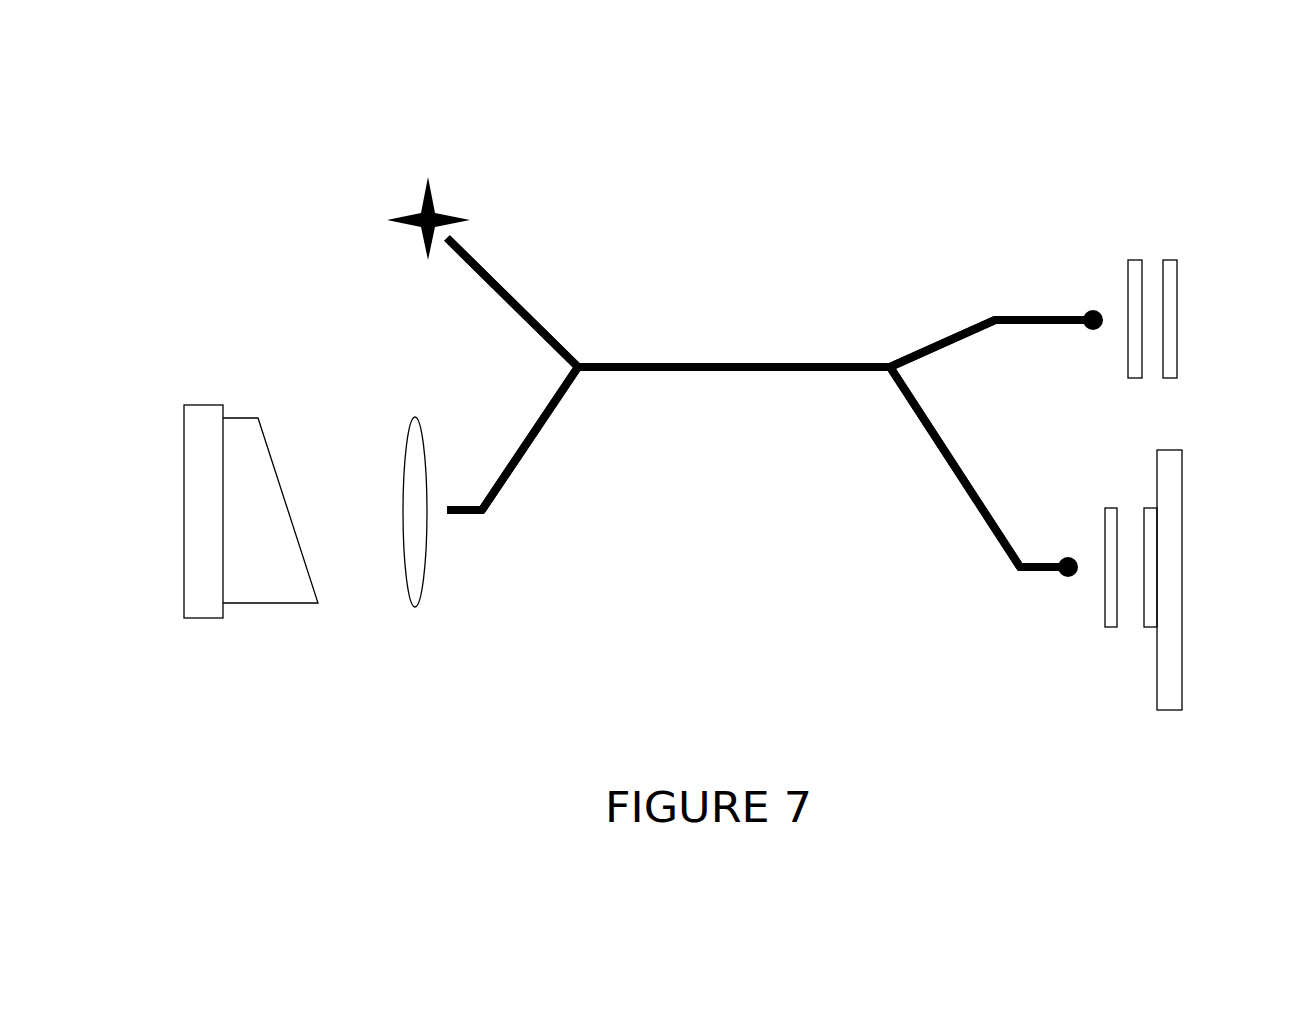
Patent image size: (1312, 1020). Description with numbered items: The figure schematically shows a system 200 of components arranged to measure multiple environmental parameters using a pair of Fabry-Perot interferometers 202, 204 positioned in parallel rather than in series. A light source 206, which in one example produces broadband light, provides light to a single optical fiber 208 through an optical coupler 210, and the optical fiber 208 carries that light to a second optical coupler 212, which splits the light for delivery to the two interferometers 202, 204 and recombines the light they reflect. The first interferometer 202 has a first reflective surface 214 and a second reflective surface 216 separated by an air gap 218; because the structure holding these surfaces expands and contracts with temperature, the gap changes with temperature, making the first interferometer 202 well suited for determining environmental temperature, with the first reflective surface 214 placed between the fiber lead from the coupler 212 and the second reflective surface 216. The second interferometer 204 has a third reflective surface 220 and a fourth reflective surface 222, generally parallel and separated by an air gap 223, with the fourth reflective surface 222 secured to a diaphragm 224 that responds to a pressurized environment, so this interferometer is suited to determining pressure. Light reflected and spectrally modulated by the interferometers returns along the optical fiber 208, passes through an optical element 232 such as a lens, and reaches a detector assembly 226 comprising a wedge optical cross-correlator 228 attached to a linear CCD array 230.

The system 200 is at (648, 612).
The first interferometer 202 is at (1185, 263).
The second interferometer 204 is at (1152, 628).
The light source 206 is at (422, 210).
The optical fiber 208 is at (652, 363).
The optical coupler 210 is at (580, 362).
The second optical coupler 212 is at (891, 364).
The first reflective surface 214 is at (1128, 283).
The second reflective surface 216 is at (1178, 297).
The air gap 218 is at (1152, 367).
The third reflective surface 220 is at (1104, 522).
The fourth reflective surface 222 is at (1153, 518).
The air gap 223 is at (1128, 602).
The diaphragm 224 is at (1165, 673).
The detector assembly 226 is at (205, 513).
The wedge optical cross-correlator 228 is at (255, 438).
The linear CCD array 230 is at (207, 473).
The optical element 232 is at (410, 545).